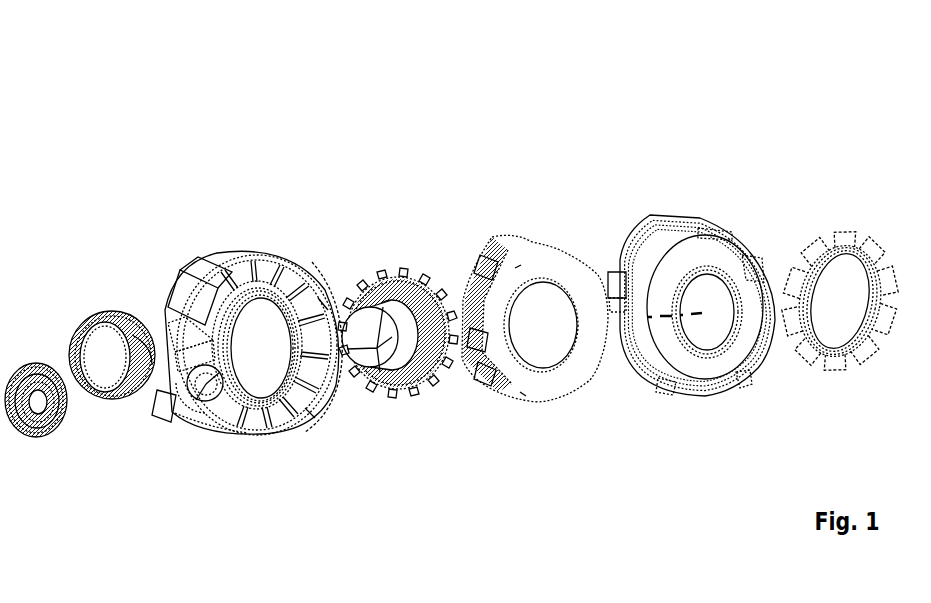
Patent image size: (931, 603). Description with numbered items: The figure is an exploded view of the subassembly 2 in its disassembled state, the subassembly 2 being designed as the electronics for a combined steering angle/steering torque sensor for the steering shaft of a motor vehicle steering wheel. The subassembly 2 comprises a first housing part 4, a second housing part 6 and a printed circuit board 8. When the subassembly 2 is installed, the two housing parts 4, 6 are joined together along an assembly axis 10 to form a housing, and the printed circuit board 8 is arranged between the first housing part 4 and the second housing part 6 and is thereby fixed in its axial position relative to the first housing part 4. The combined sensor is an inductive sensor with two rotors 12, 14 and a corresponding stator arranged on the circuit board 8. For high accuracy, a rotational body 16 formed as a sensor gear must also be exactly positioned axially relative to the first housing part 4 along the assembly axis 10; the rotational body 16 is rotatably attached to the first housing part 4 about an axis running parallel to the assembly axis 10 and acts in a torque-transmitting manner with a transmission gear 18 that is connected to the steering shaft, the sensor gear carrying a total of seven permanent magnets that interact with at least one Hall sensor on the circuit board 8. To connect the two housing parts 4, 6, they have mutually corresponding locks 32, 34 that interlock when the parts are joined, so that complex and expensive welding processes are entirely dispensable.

The subassembly 2 is at (260, 105).
The first housing part 4 is at (215, 267).
The second housing part 6 is at (733, 232).
The printed circuit board 8 is at (548, 265).
The assembly axis 10 is at (665, 315).
The rotor 12 is at (831, 236).
The rotor 14 is at (405, 287).
The rotational body 16 is at (33, 370).
The transmission gear 18 is at (115, 312).
The lock 32 is at (323, 305).
The lock 34 is at (612, 278).